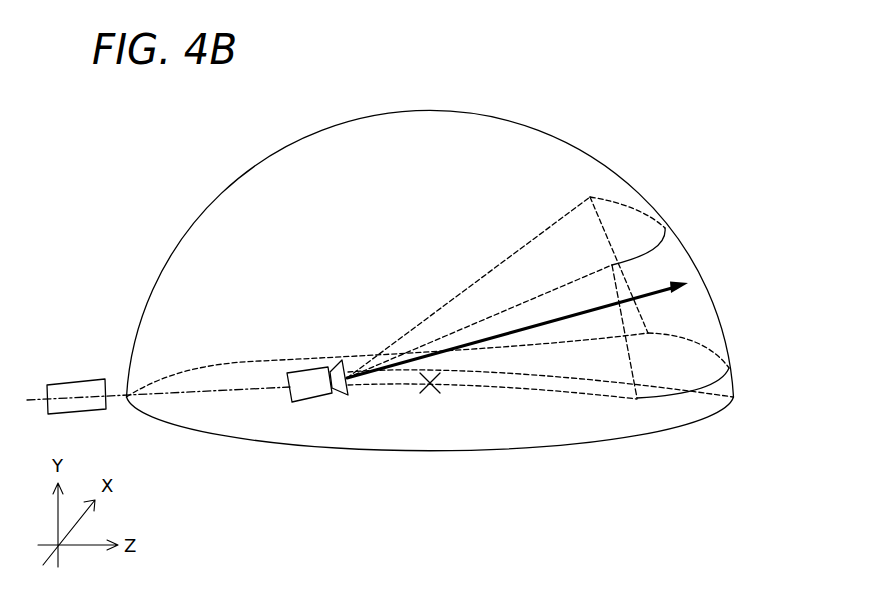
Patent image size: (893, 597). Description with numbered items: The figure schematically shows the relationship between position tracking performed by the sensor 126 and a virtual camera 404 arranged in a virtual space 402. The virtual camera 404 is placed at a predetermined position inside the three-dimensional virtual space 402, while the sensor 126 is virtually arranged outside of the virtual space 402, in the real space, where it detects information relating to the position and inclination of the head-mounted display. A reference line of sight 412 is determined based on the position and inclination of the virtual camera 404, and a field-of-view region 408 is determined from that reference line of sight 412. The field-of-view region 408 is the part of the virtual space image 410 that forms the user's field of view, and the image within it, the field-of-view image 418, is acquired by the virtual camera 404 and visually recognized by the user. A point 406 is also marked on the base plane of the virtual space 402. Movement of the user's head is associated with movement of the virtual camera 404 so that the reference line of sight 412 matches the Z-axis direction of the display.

The sensor 126 is at (82, 382).
The virtual space 402 is at (430, 252).
The virtual camera 404 is at (305, 367).
The reference point on base plane 406 is at (422, 381).
The field-of-view region 408 is at (478, 298).
The virtual space image 410 is at (315, 133).
The reference line of sight 412 is at (520, 332).
The field-of-view image 418 is at (704, 313).